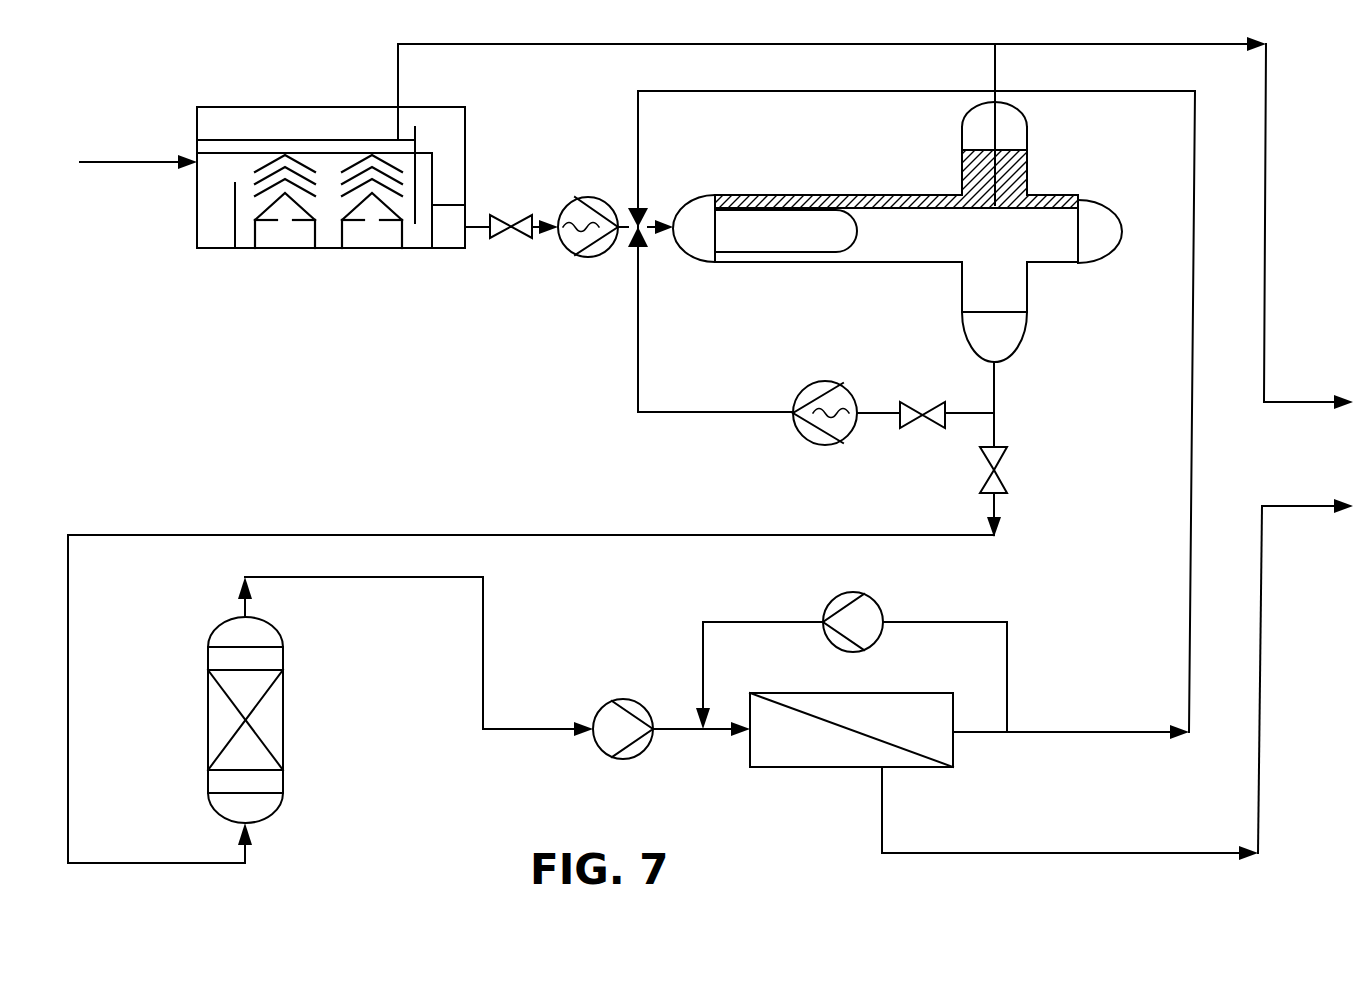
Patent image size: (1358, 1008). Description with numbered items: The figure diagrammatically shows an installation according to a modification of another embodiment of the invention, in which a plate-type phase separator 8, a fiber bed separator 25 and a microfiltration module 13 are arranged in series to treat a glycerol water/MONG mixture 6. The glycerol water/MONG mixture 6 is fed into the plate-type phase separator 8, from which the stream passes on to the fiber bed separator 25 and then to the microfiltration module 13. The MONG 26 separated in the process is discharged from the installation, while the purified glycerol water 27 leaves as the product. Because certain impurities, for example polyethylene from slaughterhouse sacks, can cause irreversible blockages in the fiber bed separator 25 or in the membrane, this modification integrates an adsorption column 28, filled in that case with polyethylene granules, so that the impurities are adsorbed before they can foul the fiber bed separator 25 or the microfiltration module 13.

The glycerol water/MONG mixture 6 is at (138, 163).
The plate-type phase separator 8 is at (216, 236).
The microfiltration module 13 is at (803, 743).
The fiber bed separator 25 is at (898, 249).
The MONG 26 is at (1293, 402).
The purified glycerol water 27 is at (1293, 507).
The adsorption column 28 is at (277, 722).